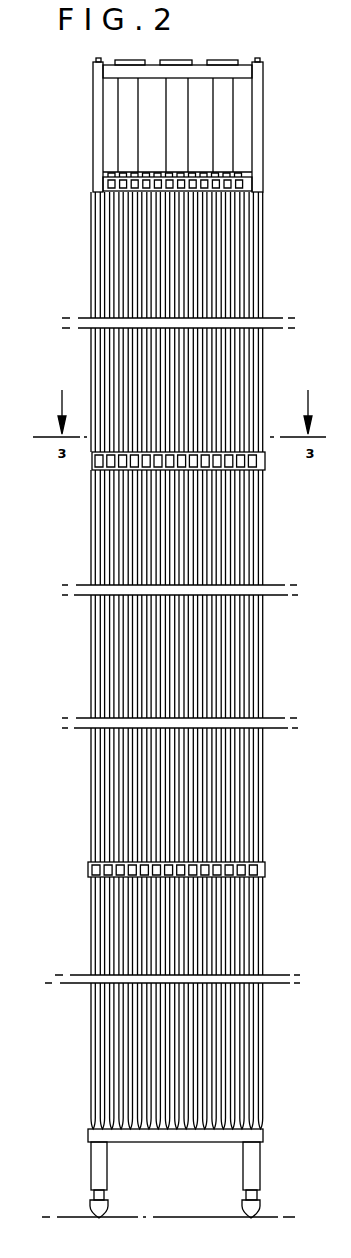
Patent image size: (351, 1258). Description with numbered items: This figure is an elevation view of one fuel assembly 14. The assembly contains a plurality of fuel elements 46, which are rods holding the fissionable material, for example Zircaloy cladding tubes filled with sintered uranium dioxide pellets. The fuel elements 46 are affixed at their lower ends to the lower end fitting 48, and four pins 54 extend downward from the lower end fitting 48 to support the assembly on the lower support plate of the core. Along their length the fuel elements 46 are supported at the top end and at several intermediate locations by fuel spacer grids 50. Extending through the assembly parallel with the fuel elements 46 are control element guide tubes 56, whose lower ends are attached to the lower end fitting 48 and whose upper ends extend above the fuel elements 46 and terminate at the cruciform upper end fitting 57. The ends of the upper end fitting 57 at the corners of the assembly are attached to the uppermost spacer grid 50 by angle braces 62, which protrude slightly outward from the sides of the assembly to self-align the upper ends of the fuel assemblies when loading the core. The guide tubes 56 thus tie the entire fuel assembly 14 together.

The fuel assembly 14 is at (270, 526).
The fuel elements 46 is at (122, 527).
The lower end fitting 48 is at (90, 1133).
The fuel spacer grids 50 is at (118, 190).
The pins 54 is at (95, 1168).
The control element guide tubes 56 is at (128, 122).
The upper end fitting 57 is at (215, 72).
The angle braces 62 is at (266, 98).